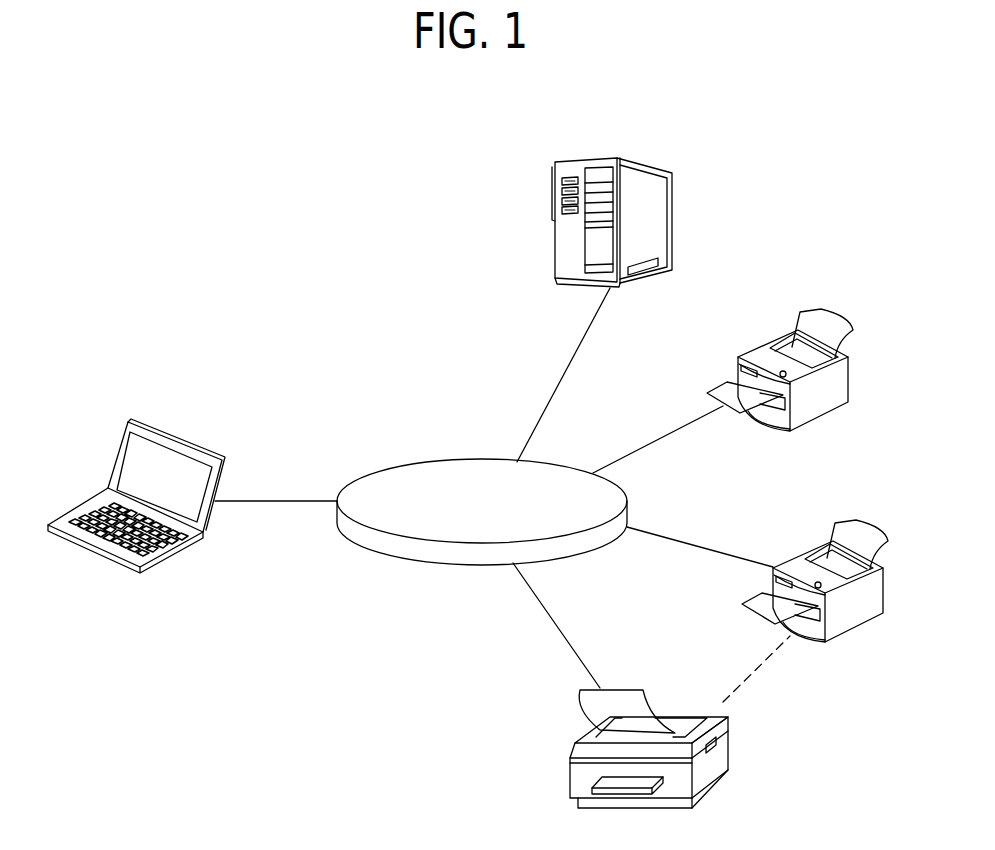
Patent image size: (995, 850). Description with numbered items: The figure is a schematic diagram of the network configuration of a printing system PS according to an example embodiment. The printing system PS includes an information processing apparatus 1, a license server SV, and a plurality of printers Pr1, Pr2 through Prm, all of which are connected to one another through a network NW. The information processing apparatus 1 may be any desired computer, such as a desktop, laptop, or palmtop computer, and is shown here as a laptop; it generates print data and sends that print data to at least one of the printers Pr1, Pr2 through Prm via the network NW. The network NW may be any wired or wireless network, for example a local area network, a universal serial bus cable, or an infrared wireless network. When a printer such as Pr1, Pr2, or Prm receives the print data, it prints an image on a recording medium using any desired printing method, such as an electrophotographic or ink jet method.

The printing system PS is at (254, 217).
The information processing apparatus 1 is at (177, 443).
The network NW is at (397, 557).
The license server SV is at (607, 160).
The printer Pr1 is at (778, 335).
The printer Pr2 is at (802, 553).
The printer Prm is at (570, 782).